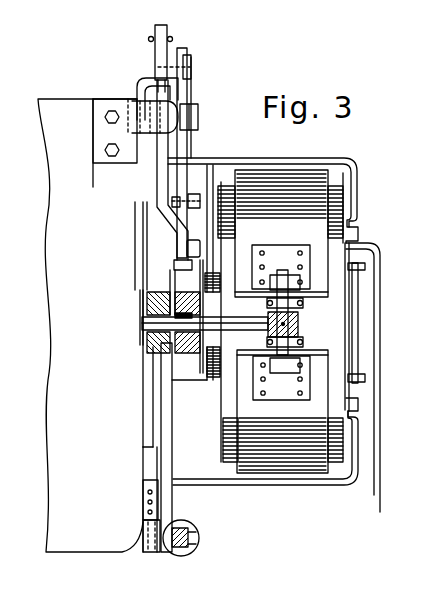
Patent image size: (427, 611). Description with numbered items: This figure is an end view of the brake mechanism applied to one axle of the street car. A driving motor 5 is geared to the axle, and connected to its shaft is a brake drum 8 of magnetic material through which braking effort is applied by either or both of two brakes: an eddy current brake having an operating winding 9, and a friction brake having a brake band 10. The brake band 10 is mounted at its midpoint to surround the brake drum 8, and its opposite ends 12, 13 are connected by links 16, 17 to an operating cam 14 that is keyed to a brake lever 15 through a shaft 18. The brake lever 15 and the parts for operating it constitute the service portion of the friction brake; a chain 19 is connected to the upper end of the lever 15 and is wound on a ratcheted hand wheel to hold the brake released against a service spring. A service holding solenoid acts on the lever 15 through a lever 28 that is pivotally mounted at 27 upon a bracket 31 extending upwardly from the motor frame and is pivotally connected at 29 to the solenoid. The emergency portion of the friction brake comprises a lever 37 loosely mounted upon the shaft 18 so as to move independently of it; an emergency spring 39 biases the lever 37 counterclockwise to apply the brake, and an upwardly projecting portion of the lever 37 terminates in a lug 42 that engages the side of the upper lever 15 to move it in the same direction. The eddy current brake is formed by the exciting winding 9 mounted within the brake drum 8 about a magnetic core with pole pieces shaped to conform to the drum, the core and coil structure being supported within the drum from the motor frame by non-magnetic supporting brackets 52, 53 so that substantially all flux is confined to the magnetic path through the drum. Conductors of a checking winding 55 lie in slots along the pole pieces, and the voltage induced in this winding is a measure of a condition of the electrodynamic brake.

The driving motor 5 is at (62, 98).
The brake drum 8 is at (343, 188).
The operating winding 9 is at (358, 291).
The brake band 10 is at (336, 170).
The end of brake band 12 is at (356, 277).
The end of brake band 13 is at (329, 362).
The operating cam 14 is at (301, 312).
The brake lever 15 is at (160, 183).
The link 16 is at (300, 293).
The link 17 is at (302, 348).
The shaft 18 is at (299, 323).
The chain 19 is at (150, 39).
The pivot 27 is at (194, 68).
The lever 28 is at (189, 145).
The pivotal connection 29 is at (211, 186).
The bracket 31 is at (147, 80).
The lever 37 is at (173, 413).
The emergency spring 39 is at (198, 522).
The lug 42 is at (198, 247).
The supporting bracket 52 is at (253, 160).
The supporting bracket 53 is at (262, 487).
The checking winding 55 is at (378, 505).